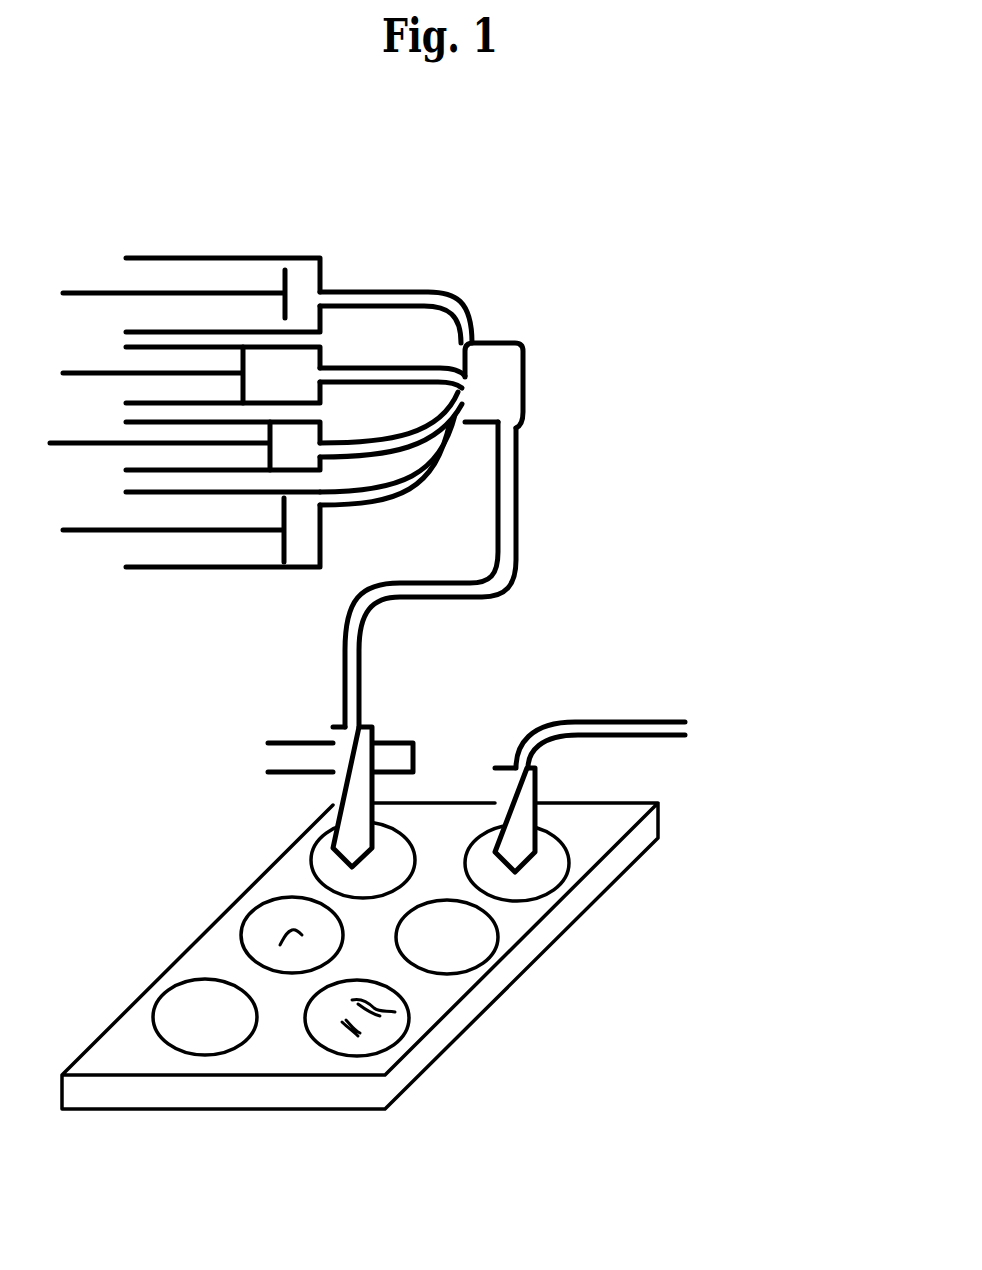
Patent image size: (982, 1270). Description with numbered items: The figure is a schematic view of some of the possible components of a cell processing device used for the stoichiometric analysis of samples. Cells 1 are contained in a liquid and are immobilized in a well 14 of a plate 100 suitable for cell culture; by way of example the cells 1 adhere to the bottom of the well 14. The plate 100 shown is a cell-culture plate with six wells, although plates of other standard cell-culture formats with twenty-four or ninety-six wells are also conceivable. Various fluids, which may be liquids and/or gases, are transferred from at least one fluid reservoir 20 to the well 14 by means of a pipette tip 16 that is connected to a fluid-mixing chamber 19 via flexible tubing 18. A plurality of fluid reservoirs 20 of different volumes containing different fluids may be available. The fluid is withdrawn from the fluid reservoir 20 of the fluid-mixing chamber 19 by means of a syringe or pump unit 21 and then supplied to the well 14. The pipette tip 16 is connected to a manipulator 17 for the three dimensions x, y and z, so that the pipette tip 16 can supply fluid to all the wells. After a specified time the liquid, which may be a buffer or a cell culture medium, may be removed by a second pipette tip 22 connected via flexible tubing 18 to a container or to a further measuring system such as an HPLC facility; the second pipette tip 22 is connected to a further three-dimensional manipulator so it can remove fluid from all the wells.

The cells 1 is at (356, 1012).
The well 14 is at (445, 937).
The pipette tip 16 is at (353, 785).
The manipulator 17 is at (290, 757).
The flexible tubing 18 is at (342, 677).
The fluid-mixing chamber 19 is at (503, 392).
The fluid reservoir 20 is at (322, 272).
The syringe or pump unit 21 is at (140, 292).
The second pipette tip 22 is at (513, 818).
The plate 100 is at (565, 908).